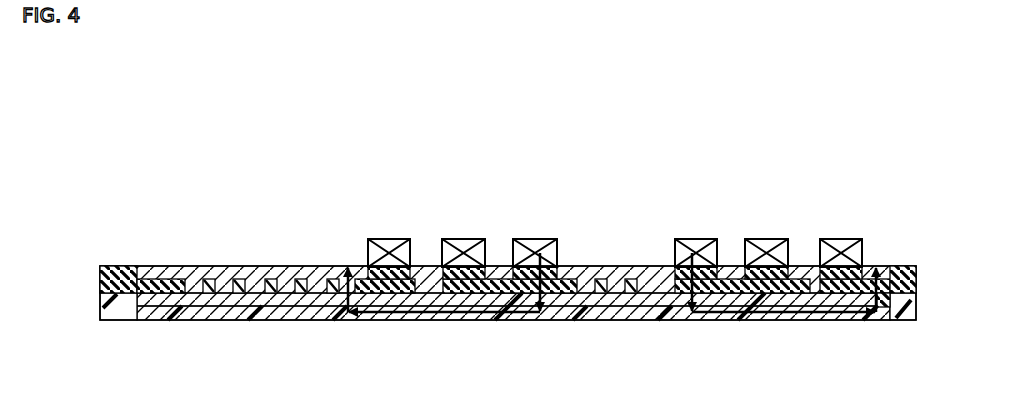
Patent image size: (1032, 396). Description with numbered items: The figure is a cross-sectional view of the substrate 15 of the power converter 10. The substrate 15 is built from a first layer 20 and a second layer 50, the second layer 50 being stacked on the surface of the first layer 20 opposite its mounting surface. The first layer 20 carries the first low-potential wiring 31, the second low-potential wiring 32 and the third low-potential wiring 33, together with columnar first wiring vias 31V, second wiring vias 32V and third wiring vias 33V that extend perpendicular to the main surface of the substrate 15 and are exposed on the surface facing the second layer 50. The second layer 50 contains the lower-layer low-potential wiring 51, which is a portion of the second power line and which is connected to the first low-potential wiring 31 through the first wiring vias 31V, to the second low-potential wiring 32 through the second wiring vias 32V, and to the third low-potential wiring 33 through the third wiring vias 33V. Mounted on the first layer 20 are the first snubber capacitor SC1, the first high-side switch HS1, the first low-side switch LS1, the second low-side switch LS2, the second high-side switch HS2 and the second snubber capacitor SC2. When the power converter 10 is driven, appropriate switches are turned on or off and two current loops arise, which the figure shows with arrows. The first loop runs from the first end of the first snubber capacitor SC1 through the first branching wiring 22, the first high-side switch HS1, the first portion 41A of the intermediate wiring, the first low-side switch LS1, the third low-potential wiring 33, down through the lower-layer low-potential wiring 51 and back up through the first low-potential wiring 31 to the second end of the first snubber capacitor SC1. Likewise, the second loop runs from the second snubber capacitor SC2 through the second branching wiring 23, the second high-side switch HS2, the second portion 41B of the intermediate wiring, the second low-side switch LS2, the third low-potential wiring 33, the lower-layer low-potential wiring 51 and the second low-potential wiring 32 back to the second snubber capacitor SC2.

The power converter 10 is at (892, 180).
The substrate 15 is at (148, 257).
The first layer 20 is at (100, 271).
The first branching wiring 22 is at (421, 268).
The second branching wiring 23 is at (809, 268).
The first low-potential wiring 31 is at (258, 278).
The first wiring vias 31V is at (195, 305).
The second low-potential wiring 32 is at (897, 267).
The second wiring vias 32V is at (881, 316).
The third low-potential wiring 33 is at (643, 268).
The third wiring vias 33V is at (615, 296).
The first portion of the intermediate wiring 41A is at (500, 280).
The second portion of the intermediate wiring 41B is at (728, 280).
The second layer 50 is at (100, 300).
The lower-layer low-potential wiring 51 is at (312, 300).
The first snubber capacitor SC1 is at (388, 239).
The second snubber capacitor SC2 is at (843, 239).
The first high-side switch HS1 is at (470, 239).
The second high-side switch HS2 is at (770, 239).
The first low-side switch LS1 is at (540, 239).
The second low-side switch LS2 is at (700, 239).